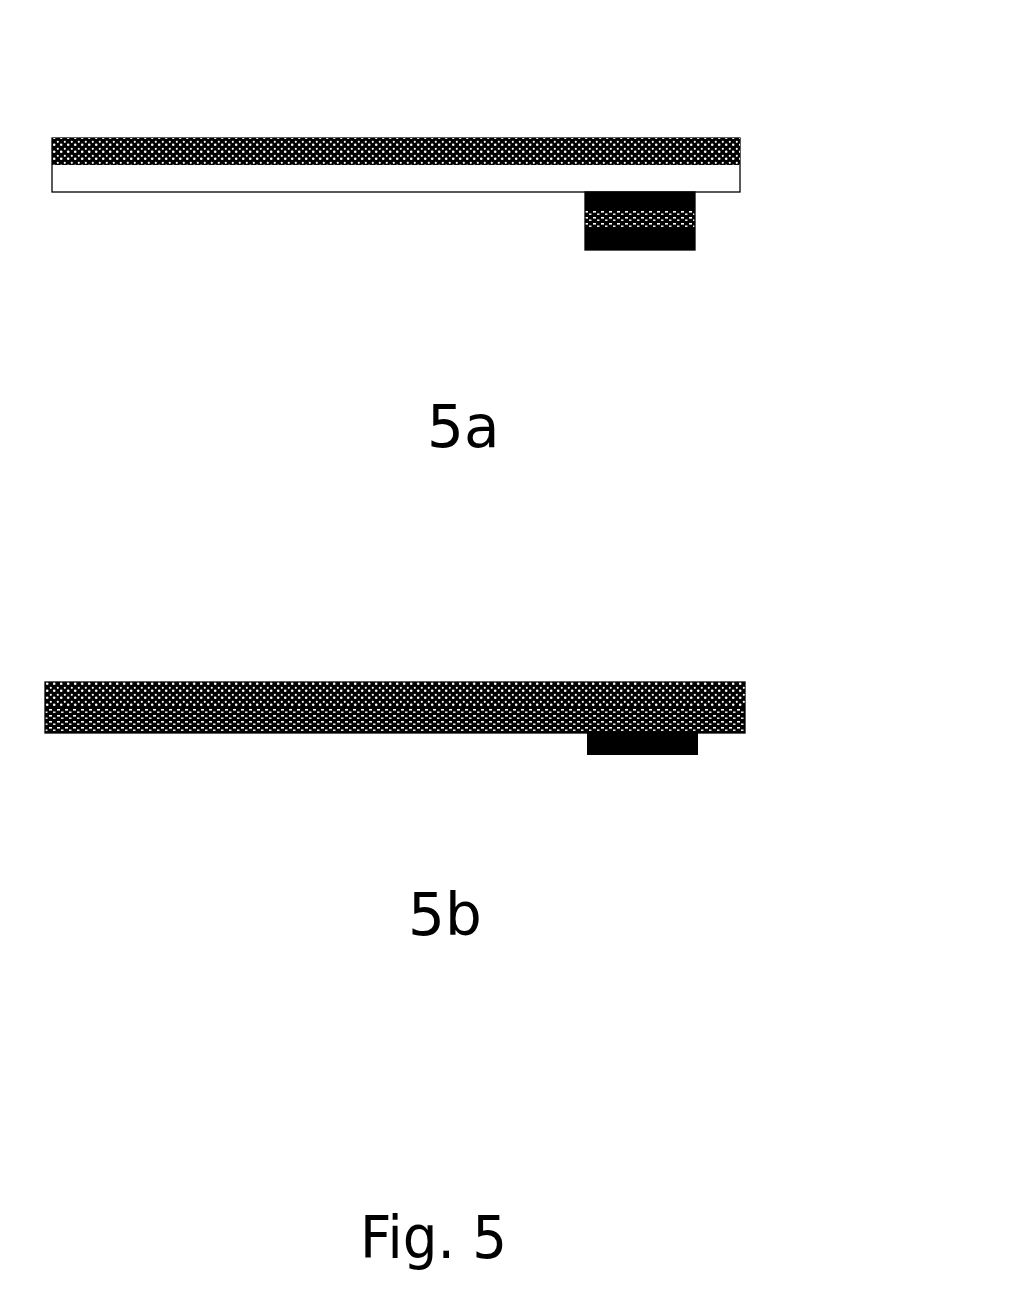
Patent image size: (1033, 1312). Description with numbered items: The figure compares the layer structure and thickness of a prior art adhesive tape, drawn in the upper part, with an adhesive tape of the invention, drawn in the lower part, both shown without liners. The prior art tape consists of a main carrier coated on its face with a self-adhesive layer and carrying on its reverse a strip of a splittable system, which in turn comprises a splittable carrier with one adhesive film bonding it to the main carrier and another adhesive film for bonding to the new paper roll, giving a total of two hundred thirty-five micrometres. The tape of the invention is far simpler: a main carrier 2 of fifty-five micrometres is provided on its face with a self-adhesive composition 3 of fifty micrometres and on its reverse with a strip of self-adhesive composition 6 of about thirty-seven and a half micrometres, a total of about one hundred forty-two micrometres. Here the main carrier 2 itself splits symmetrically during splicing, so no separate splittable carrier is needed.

The main carrier 2 is at (745, 718).
The self-adhesive composition 3 is at (725, 682).
The self-adhesive composition 6 is at (700, 747).